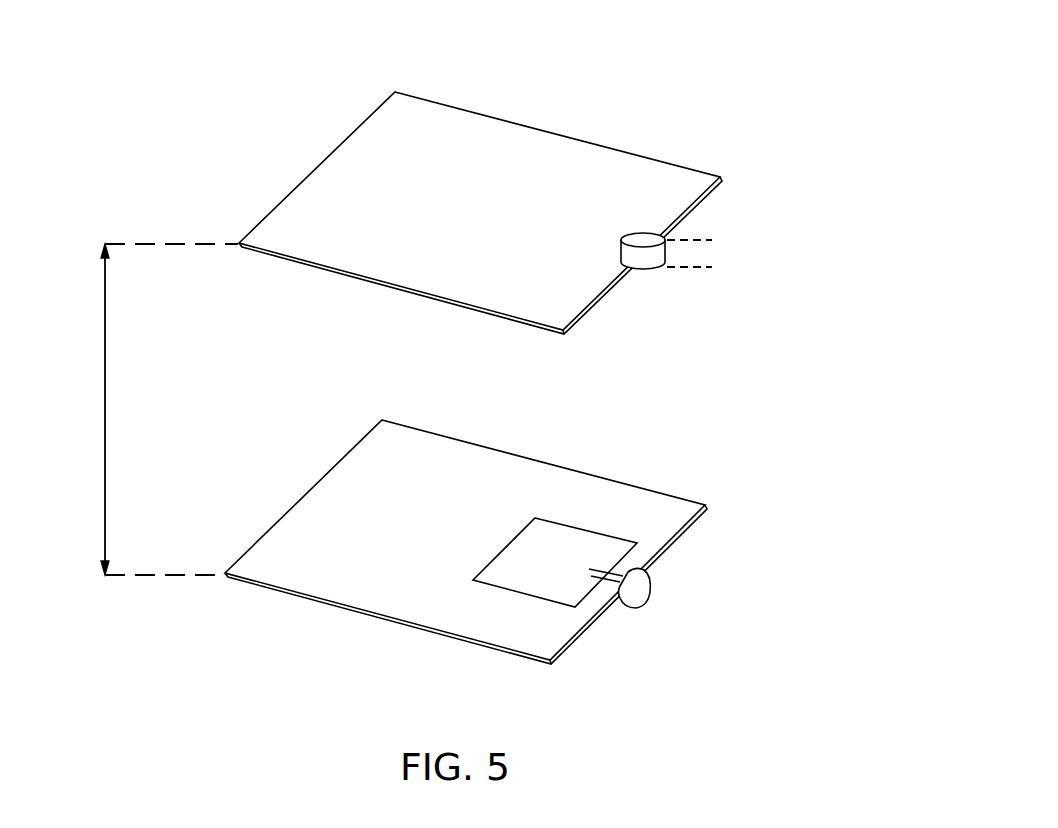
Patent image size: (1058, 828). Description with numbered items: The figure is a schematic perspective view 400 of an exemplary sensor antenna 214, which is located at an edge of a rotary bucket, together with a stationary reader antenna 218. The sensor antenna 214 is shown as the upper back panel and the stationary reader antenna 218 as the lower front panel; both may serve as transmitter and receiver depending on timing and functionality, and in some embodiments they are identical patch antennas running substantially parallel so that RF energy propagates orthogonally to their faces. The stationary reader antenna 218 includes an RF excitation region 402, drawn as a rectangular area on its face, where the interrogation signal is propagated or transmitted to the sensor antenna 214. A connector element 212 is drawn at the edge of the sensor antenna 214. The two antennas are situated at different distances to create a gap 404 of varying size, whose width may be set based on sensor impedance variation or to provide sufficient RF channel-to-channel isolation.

The schematic perspective view 400 is at (270, 68).
The gap 404 is at (104, 408).
The sensor antenna 214 is at (688, 162).
The connector disk 212 is at (718, 240).
The stationary reader antenna 218 is at (690, 524).
The RF excitation region 402 is at (553, 602).